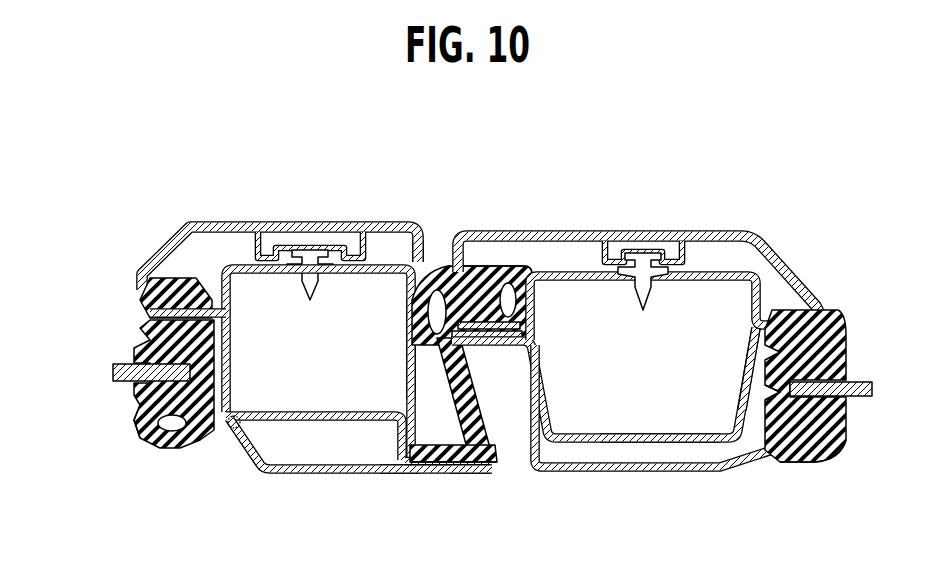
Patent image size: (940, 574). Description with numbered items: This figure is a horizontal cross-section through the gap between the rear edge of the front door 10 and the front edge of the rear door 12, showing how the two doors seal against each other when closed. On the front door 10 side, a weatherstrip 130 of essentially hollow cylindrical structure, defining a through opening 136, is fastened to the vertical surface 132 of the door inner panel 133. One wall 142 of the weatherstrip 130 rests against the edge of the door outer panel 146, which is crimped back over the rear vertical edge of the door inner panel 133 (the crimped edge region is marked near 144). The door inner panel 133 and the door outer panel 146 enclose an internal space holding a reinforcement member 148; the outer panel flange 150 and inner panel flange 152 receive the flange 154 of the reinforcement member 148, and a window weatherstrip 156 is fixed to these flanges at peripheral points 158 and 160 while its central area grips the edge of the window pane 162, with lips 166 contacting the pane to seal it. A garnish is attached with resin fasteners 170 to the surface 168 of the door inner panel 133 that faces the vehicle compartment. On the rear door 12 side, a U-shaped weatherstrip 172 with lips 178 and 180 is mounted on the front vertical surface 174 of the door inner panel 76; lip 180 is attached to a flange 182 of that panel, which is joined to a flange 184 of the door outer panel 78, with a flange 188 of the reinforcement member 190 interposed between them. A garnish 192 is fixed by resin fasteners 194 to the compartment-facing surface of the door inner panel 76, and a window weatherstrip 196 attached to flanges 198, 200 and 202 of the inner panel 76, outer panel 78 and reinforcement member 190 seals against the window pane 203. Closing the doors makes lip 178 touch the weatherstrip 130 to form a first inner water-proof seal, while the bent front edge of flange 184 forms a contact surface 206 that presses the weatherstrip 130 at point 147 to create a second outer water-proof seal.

The front door 10 is at (250, 482).
The rear door 12 is at (614, 480).
The door inner panel 76 is at (735, 278).
The door outer panel 78 is at (684, 473).
The weatherstrip 130 is at (497, 425).
The vertical surface 132 is at (393, 474).
The door inner panel 133 is at (256, 264).
The through opening 136 is at (445, 440).
The wall 142 is at (423, 472).
The flange end 144 is at (479, 476).
The door outer panel 146 is at (305, 474).
The point 147 is at (453, 305).
The reinforcement member 148 is at (303, 410).
The flange 150 is at (215, 428).
The flange 152 is at (168, 285).
The flange 154 is at (165, 272).
The window weatherstrip 156 is at (145, 424).
The peripheral point 158 is at (134, 322).
The peripheral point 160 is at (165, 432).
The window pane 162 is at (140, 374).
The lips / garnish 166 is at (332, 230).
The surface 168 is at (377, 262).
The resin fasteners 170 is at (318, 284).
The weatherstrip 172 is at (512, 278).
The front vertical surface 174 is at (584, 240).
The lip 178 is at (425, 290).
The lip 180 is at (480, 352).
The flange 182 is at (537, 325).
The flange 184 is at (543, 367).
The flange 188 is at (530, 343).
The reinforcement member 190 is at (673, 434).
The garnish 192 is at (713, 232).
The resin fasteners 194 is at (652, 292).
The window weatherstrip 196 is at (764, 430).
The flange 198 is at (820, 305).
The flange 200 is at (800, 450).
The flange 202 is at (752, 336).
The window pane 203 is at (852, 398).
The contact surface 206 is at (406, 351).